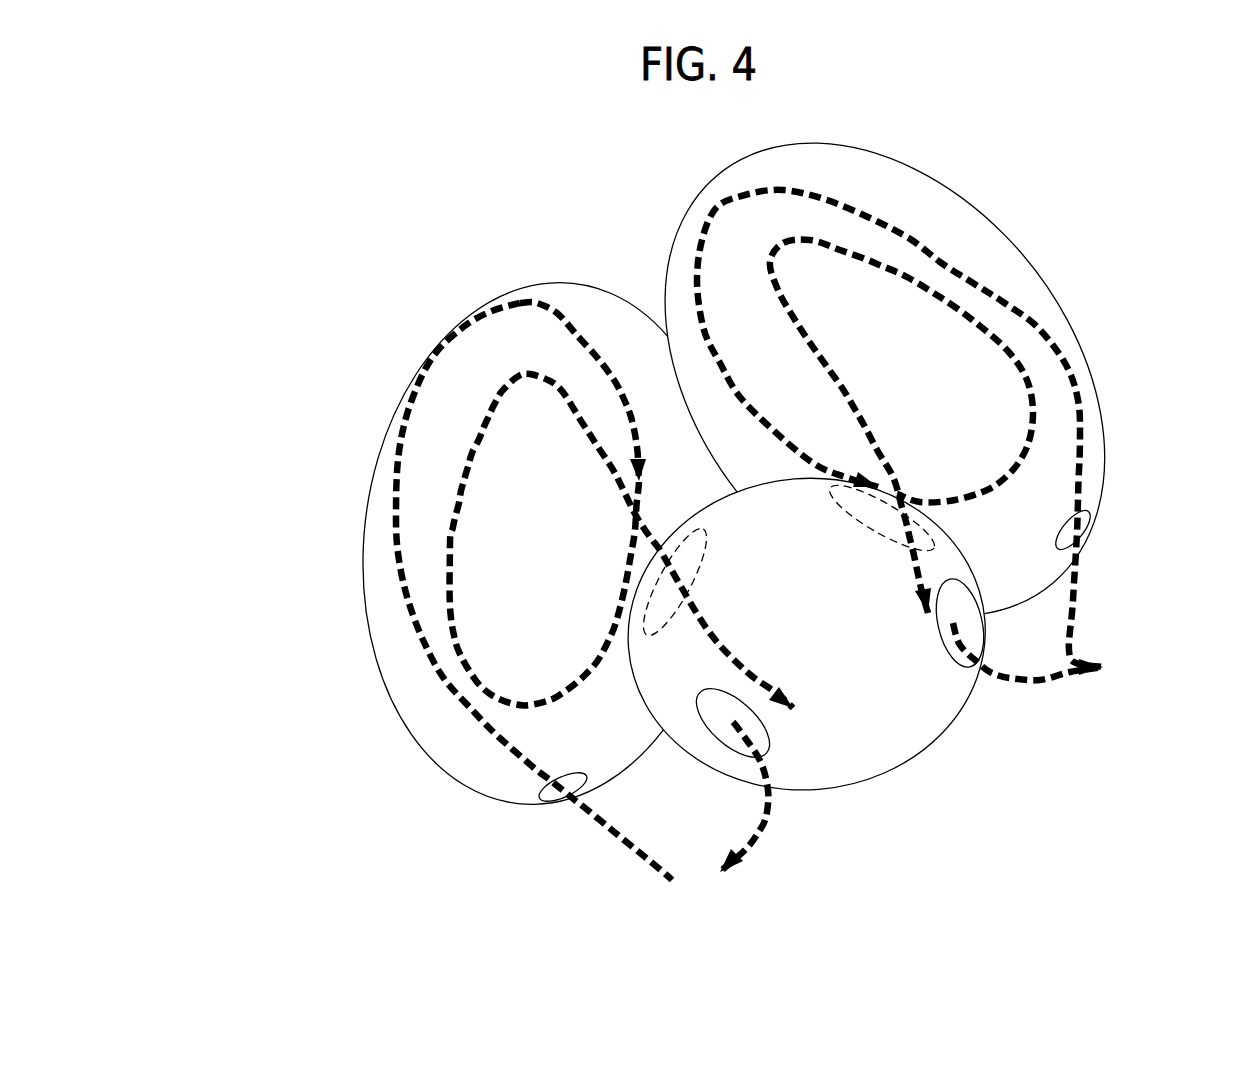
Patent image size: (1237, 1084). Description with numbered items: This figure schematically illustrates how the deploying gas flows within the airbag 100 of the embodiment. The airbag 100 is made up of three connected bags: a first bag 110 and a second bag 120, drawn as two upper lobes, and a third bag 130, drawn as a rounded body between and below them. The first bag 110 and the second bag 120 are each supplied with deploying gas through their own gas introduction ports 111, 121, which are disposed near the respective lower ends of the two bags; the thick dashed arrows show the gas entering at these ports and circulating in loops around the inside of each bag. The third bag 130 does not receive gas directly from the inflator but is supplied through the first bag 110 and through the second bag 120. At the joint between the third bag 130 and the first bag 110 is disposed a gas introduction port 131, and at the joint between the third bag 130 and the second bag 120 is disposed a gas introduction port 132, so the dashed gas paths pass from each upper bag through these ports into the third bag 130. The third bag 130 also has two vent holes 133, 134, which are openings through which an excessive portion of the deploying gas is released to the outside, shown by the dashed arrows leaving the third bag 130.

The airbag 100 is at (366, 257).
The first bag 110 is at (1007, 243).
The gas introduction port 111 is at (1085, 528).
The second bag 120 is at (512, 292).
The gas introduction port 121 is at (552, 792).
The third bag 130 is at (897, 767).
The gas introduction port 131 is at (925, 533).
The gas introduction port 132 is at (658, 588).
The vent hole 133 is at (963, 660).
The vent hole 134 is at (743, 757).